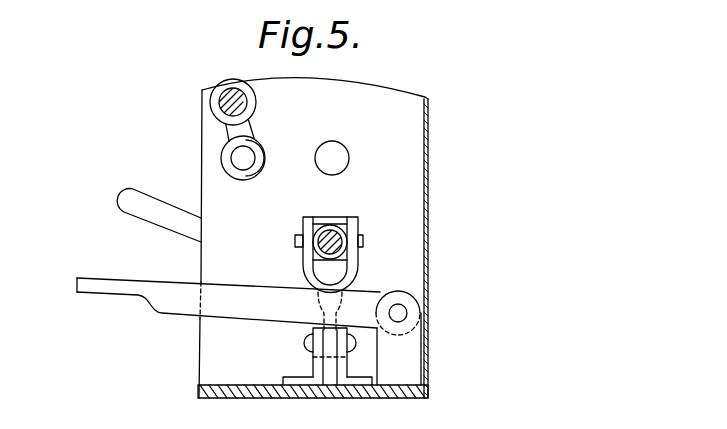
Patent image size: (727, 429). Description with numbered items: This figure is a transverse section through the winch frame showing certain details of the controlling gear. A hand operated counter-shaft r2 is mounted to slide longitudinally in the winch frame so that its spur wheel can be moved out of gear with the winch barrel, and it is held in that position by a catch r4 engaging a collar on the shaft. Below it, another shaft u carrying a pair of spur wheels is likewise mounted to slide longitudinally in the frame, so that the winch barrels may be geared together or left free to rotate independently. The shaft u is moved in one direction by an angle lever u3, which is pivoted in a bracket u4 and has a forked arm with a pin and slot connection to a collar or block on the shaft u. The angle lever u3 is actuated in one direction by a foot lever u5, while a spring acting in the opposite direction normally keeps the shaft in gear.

The hand operated counter-shaft r2 is at (240, 161).
The catch r4 is at (250, 138).
The shaft u is at (329, 237).
The angle lever u3 is at (351, 289).
The bracket u4 is at (322, 364).
The foot lever u5 is at (152, 291).